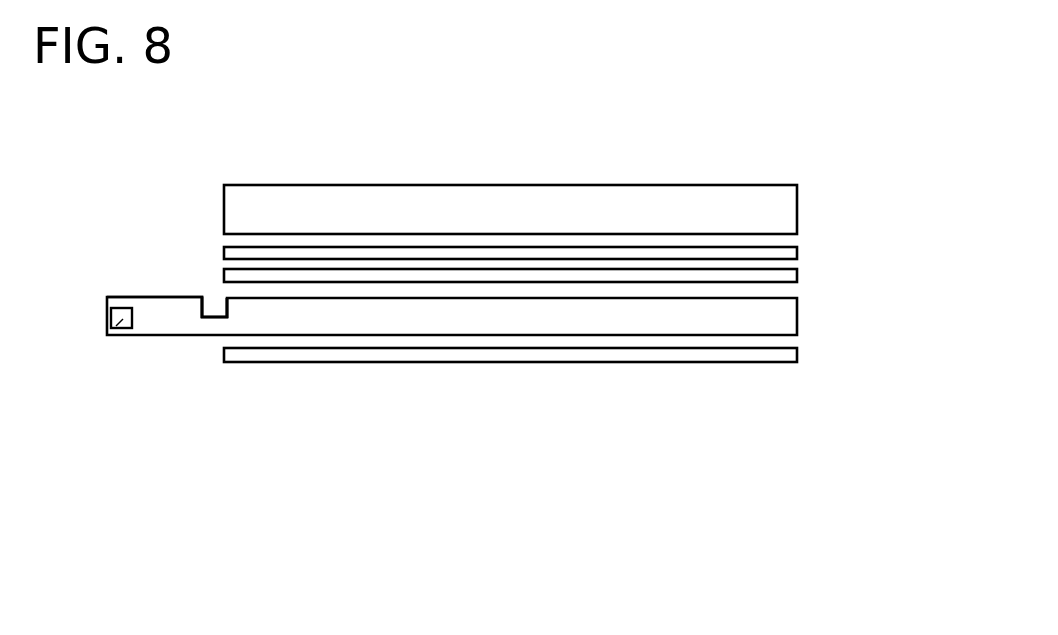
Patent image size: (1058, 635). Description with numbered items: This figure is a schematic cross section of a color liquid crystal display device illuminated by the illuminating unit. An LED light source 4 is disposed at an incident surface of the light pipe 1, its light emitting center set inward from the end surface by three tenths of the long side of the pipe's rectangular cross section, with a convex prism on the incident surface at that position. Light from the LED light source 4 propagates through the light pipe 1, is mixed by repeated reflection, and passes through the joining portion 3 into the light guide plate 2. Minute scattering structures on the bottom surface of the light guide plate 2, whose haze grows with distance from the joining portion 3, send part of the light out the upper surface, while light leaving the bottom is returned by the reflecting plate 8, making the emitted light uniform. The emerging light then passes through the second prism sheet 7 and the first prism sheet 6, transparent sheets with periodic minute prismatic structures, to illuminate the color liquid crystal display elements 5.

The light pipe 1 is at (153, 310).
The light guide plate 2 is at (797, 323).
The joining portion 3 is at (212, 327).
The LED light source 4 is at (105, 333).
The color liquid crystal display elements 5 is at (665, 184).
The first prism sheet 6 is at (797, 251).
The second prism sheet 7 is at (797, 278).
The reflecting plate 8 is at (723, 361).